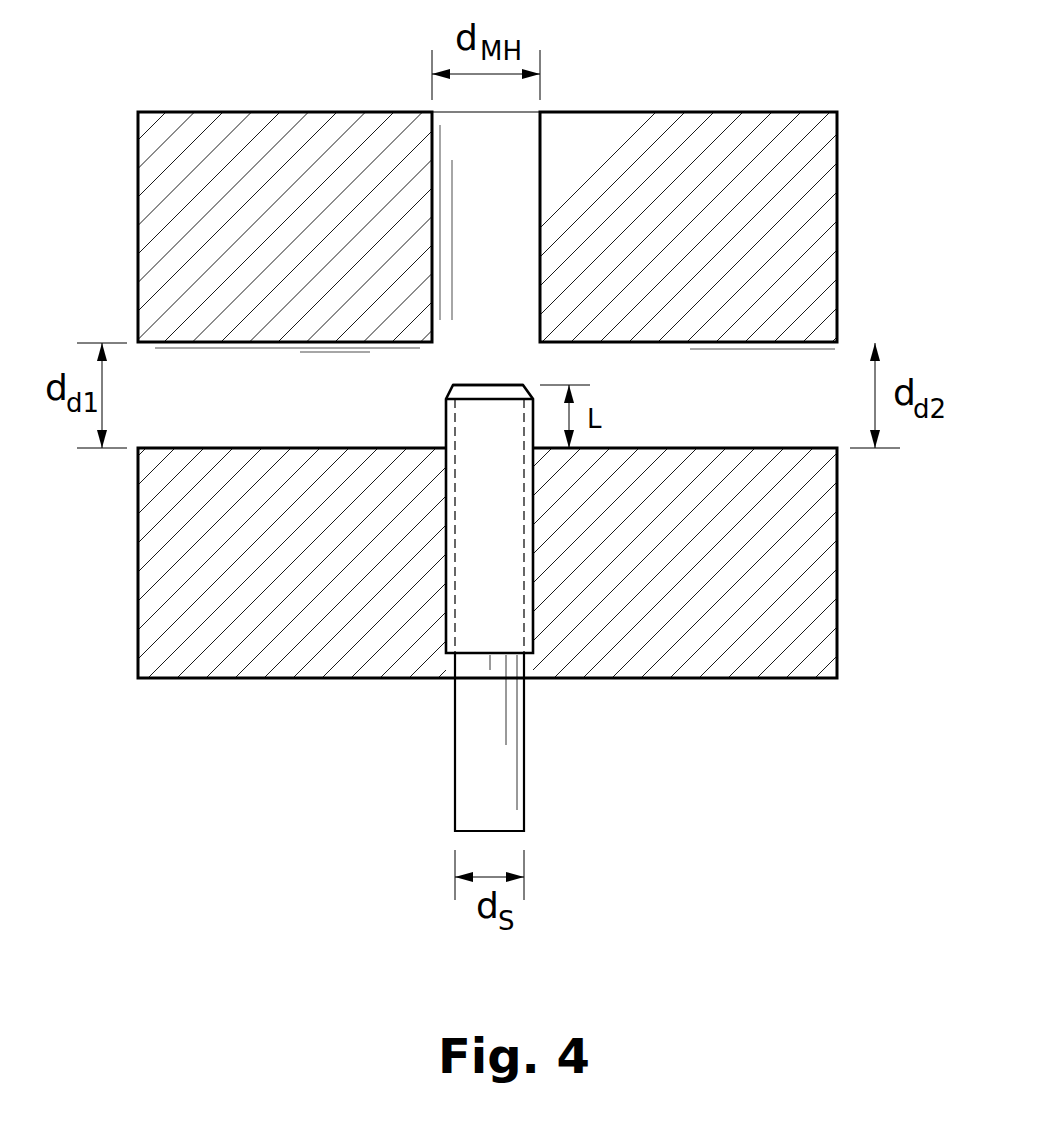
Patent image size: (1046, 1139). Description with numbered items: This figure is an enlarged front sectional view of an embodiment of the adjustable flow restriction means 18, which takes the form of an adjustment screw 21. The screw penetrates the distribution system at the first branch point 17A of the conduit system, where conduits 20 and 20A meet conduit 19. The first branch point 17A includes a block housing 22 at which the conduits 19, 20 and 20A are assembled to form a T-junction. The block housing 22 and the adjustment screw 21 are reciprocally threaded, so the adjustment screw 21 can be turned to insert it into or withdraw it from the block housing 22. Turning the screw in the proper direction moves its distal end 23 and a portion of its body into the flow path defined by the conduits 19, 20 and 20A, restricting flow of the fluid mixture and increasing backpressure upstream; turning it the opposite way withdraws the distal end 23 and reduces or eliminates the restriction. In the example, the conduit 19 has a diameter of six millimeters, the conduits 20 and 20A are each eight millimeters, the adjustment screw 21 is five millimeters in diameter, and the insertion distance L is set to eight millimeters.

The first branch point 17A is at (418, 317).
The adjustable flow restriction means 18 is at (422, 712).
The conduit 19 is at (488, 179).
The conduit 20 is at (277, 405).
The conduit 20A is at (716, 400).
The adjustment screw 21 is at (533, 582).
The block housing 22 is at (215, 610).
The distal end 23 is at (472, 390).